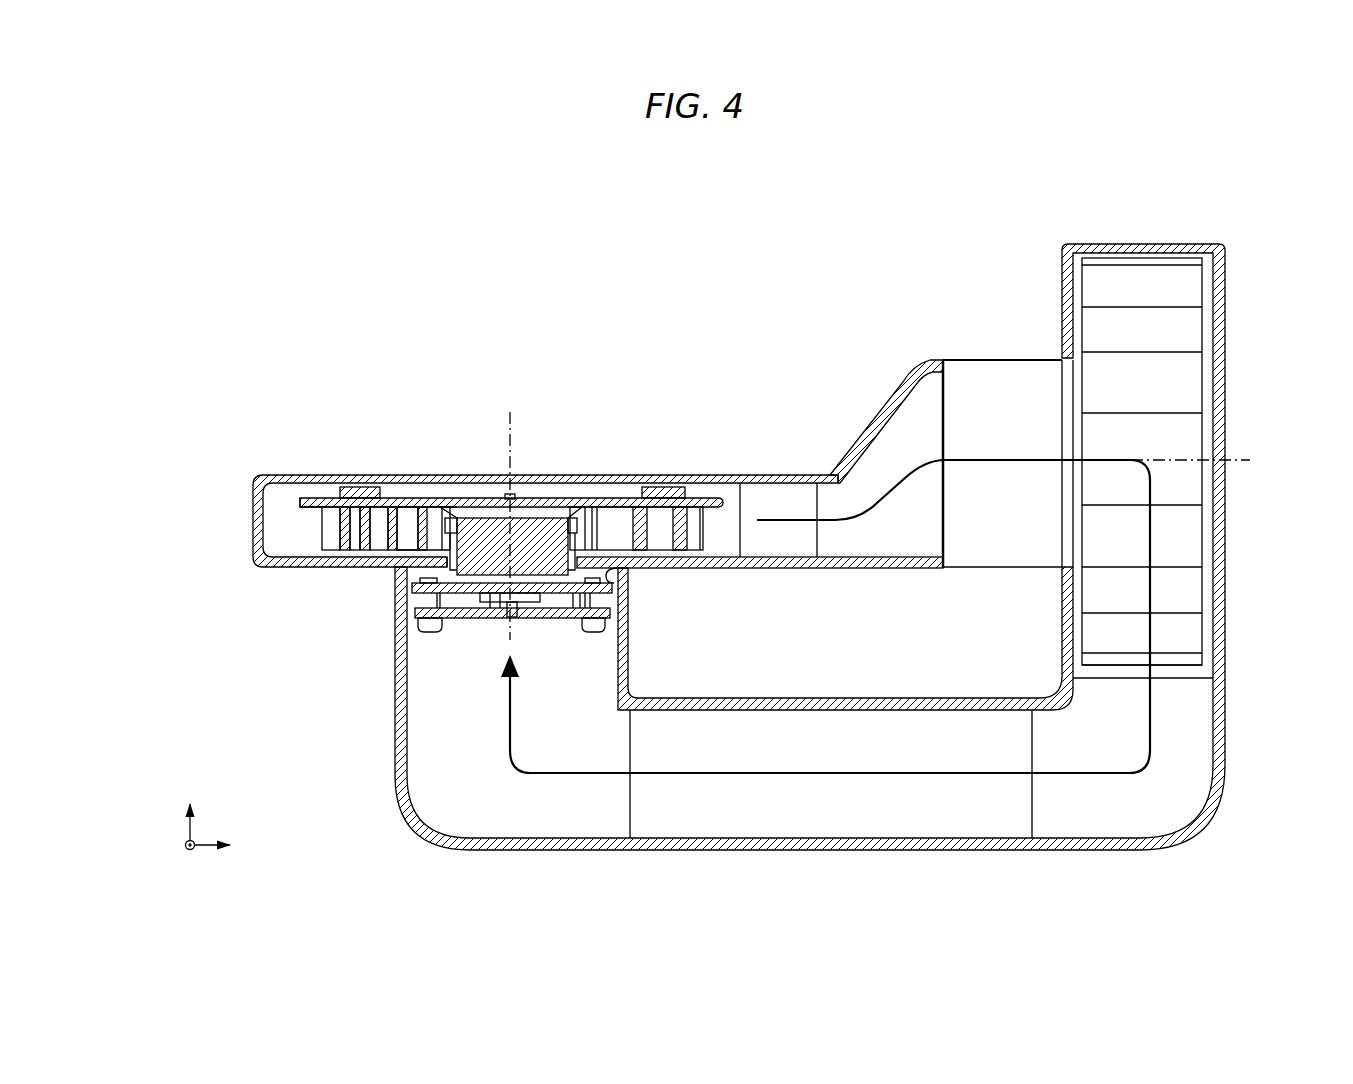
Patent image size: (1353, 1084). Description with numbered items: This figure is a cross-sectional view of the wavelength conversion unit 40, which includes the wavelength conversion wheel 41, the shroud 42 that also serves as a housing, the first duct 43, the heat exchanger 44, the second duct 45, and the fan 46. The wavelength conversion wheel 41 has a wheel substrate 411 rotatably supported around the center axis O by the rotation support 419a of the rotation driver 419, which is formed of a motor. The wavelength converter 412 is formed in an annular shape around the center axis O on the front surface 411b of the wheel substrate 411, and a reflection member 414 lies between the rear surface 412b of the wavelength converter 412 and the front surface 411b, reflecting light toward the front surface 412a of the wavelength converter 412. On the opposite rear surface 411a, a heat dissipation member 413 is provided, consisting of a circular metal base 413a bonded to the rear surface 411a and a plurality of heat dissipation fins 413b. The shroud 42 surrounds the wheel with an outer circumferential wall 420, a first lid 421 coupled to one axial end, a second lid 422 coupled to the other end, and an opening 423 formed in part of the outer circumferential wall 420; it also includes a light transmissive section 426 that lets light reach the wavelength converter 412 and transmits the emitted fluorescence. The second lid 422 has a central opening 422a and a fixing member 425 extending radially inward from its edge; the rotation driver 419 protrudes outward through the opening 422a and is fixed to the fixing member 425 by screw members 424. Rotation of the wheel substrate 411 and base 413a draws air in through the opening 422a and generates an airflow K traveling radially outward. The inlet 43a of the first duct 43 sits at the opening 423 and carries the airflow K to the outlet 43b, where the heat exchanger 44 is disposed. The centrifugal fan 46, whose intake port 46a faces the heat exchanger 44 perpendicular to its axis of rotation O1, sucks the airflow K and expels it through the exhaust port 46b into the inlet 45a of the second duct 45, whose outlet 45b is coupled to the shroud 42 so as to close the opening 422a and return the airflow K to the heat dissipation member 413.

The wavelength conversion unit 40 is at (1036, 234).
The wavelength conversion wheel 41 is at (322, 503).
The shroud 42 is at (567, 471).
The first duct 43 is at (860, 426).
The inlet 43a is at (815, 562).
The outlet 43b is at (950, 380).
The heat exchanger 44 is at (1017, 354).
The second duct 45 is at (1110, 852).
The inlet 45a is at (1183, 676).
The outlet 45b is at (403, 555).
The fan 46 is at (1182, 230).
The intake port 46a is at (1068, 528).
The exhaust port 46b is at (1193, 681).
The wheel substrate 411 is at (730, 478).
The rear surface 411a is at (330, 518).
The front surface 411b is at (318, 498).
The wavelength converter 412 is at (680, 480).
The front surface 412a is at (350, 498).
The rear surface 412b is at (340, 510).
The heat dissipation member 413 is at (165, 546).
The base 413a is at (335, 520).
The heat dissipation fins 413b is at (320, 548).
The reflection member 414 is at (702, 478).
The rotation driver 419 is at (557, 565).
The rotation support 419a is at (482, 505).
The outer circumferential wall 420 is at (262, 497).
The first lid 421 is at (622, 478).
The second lid 422 is at (313, 570).
The opening 422a is at (610, 575).
The opening 423 is at (820, 497).
The screw members 424 is at (428, 633).
The fixing member 425 is at (468, 620).
The light transmissive section 426 is at (368, 485).
The airflow K is at (907, 475).
The center axis O is at (512, 415).
The axis of rotation O1 is at (1250, 458).